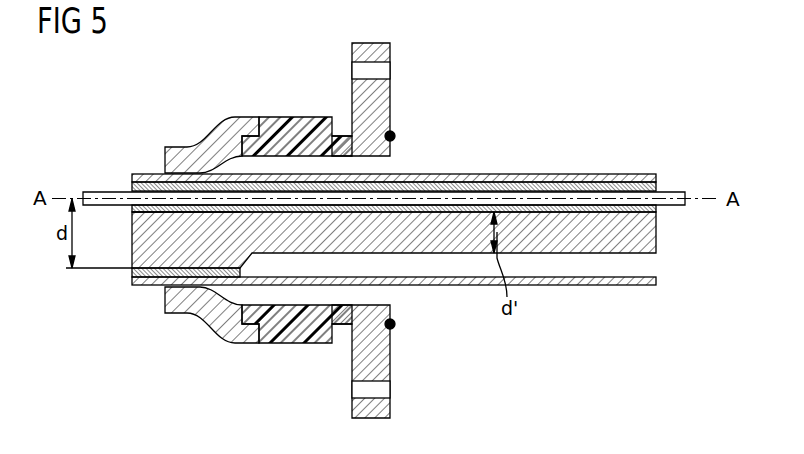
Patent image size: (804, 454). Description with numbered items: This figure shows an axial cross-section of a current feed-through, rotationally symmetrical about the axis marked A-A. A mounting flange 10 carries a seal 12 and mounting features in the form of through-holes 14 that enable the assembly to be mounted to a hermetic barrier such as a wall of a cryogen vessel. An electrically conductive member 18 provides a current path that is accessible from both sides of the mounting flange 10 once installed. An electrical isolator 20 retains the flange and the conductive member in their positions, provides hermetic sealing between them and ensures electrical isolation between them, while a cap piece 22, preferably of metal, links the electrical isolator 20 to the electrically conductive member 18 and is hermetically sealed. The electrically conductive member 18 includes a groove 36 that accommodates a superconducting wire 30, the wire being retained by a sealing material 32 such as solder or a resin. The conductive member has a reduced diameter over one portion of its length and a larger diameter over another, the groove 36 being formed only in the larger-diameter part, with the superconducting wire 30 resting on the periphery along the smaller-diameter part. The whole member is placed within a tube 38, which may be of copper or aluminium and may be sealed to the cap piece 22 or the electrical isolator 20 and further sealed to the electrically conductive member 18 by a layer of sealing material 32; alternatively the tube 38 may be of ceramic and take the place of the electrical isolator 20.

The mounting flange 10 is at (383, 111).
The seal 12 is at (396, 136).
The through-holes 14 is at (385, 71).
The electrically conductive member 18 is at (138, 250).
The electrical isolator 20 is at (293, 125).
The cap piece 22 is at (183, 155).
The superconducting wire 30 is at (670, 193).
The sealing material 32 is at (543, 186).
The groove 36 is at (141, 212).
The tube 38 is at (583, 178).